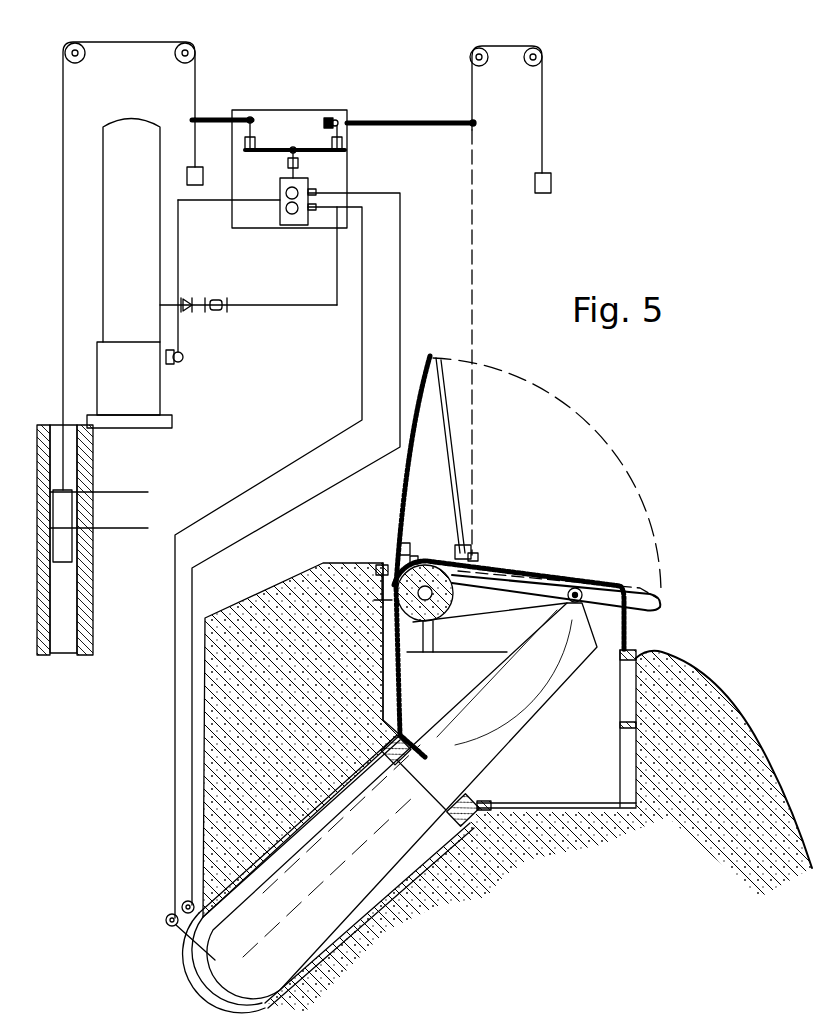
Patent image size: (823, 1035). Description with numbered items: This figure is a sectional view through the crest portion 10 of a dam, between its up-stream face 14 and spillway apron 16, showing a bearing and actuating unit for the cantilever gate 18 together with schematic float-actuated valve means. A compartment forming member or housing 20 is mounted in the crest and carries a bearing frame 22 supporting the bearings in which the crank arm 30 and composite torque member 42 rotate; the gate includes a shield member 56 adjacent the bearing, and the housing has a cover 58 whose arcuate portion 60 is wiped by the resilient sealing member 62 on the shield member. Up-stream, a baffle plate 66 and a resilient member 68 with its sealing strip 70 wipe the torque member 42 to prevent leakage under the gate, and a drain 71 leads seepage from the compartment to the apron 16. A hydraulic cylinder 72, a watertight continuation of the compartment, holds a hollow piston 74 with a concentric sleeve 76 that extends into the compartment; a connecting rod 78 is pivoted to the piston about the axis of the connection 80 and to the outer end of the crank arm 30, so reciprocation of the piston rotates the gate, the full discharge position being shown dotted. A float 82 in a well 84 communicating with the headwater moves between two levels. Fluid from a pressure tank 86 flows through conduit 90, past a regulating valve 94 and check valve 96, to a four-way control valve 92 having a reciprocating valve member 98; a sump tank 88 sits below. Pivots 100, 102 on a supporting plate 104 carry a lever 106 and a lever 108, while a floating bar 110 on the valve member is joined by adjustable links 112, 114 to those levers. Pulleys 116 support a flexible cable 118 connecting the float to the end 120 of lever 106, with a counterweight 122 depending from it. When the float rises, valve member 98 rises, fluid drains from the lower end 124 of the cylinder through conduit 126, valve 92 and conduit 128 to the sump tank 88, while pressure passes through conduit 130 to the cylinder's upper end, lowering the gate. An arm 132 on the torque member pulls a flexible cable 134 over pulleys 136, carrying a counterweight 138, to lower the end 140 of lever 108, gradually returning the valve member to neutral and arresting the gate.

The crest portion 10 is at (697, 817).
The up-stream face 14 is at (233, 606).
The spillway face or apron 16 is at (737, 717).
The gate 18 is at (398, 470).
The compartment forming member or housing 20 is at (402, 668).
The bearing frame 22 is at (410, 642).
The crank arm 30 is at (530, 578).
The composite torque member 42 is at (485, 577).
The shield member 56 is at (455, 475).
The cover 58 is at (562, 580).
The arcuate portion 60 is at (465, 545).
The resilient sealing member 62 is at (402, 543).
The baffle plate 66 is at (410, 556).
The resilient member 68 is at (376, 568).
The resilient sealing strip 70 is at (380, 600).
The drain 71 is at (528, 872).
The hydraulic cylinder 72 is at (370, 933).
The hollow piston 74 is at (403, 900).
The concentric sleeve 76 is at (558, 678).
The connecting rod 78 is at (583, 601).
The axis of the connection 80 is at (418, 787).
The float 82 is at (70, 490).
The well 84 is at (78, 548).
The pressure tank 86 is at (115, 236).
The sump tank 88 is at (110, 365).
The conduit 90 is at (186, 298).
The four-way control valve 92 is at (280, 196).
The regulating valve 94 is at (186, 312).
The check valve 96 is at (222, 298).
The reciprocating valve member 98 is at (290, 165).
The pivot 100 is at (250, 116).
The pivot 102 is at (330, 118).
The supporting plate 104 is at (282, 120).
The lever 106 is at (215, 117).
The lever 108 is at (430, 122).
The floating bar 110 is at (305, 152).
The adjustable link 112 is at (245, 143).
The adjustable link 114 is at (343, 145).
The pulleys 116 is at (175, 57).
The flexible cable 118 is at (105, 42).
The end of lever 120 is at (193, 120).
The counterweight 122 is at (187, 172).
The pressure or lower end of cylinder 124 is at (218, 960).
The conduit 126 is at (364, 290).
The conduit 128 is at (181, 248).
The conduit 130 is at (402, 246).
The arm 132 is at (478, 556).
The flexible cable 134 is at (475, 284).
The pulleys 136 is at (528, 66).
The counterweight 138 is at (551, 185).
The end of lever 140 is at (475, 127).